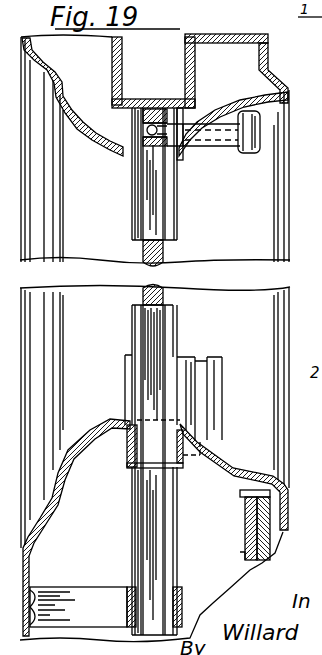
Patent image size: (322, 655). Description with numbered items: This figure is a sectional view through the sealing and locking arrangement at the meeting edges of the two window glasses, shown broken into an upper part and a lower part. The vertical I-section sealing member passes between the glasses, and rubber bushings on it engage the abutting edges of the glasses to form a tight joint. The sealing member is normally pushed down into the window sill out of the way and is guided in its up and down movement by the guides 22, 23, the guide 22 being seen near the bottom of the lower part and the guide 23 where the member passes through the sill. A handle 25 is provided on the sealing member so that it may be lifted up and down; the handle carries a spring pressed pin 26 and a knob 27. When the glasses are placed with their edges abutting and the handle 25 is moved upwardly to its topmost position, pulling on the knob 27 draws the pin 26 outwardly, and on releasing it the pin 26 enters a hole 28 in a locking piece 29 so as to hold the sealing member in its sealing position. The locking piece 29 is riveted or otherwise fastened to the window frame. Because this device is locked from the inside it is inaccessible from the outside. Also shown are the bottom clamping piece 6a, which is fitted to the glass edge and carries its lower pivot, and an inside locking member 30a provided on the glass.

The clamping piece 6a is at (127, 402).
The guide 22 is at (108, 610).
The guide 23 is at (127, 450).
The handle 25 is at (222, 147).
The spring pressed pin 26 is at (156, 125).
The knob 27 is at (253, 143).
The hole 28 is at (148, 130).
The locking piece 29 is at (152, 122).
The inside locking member 30a is at (222, 392).